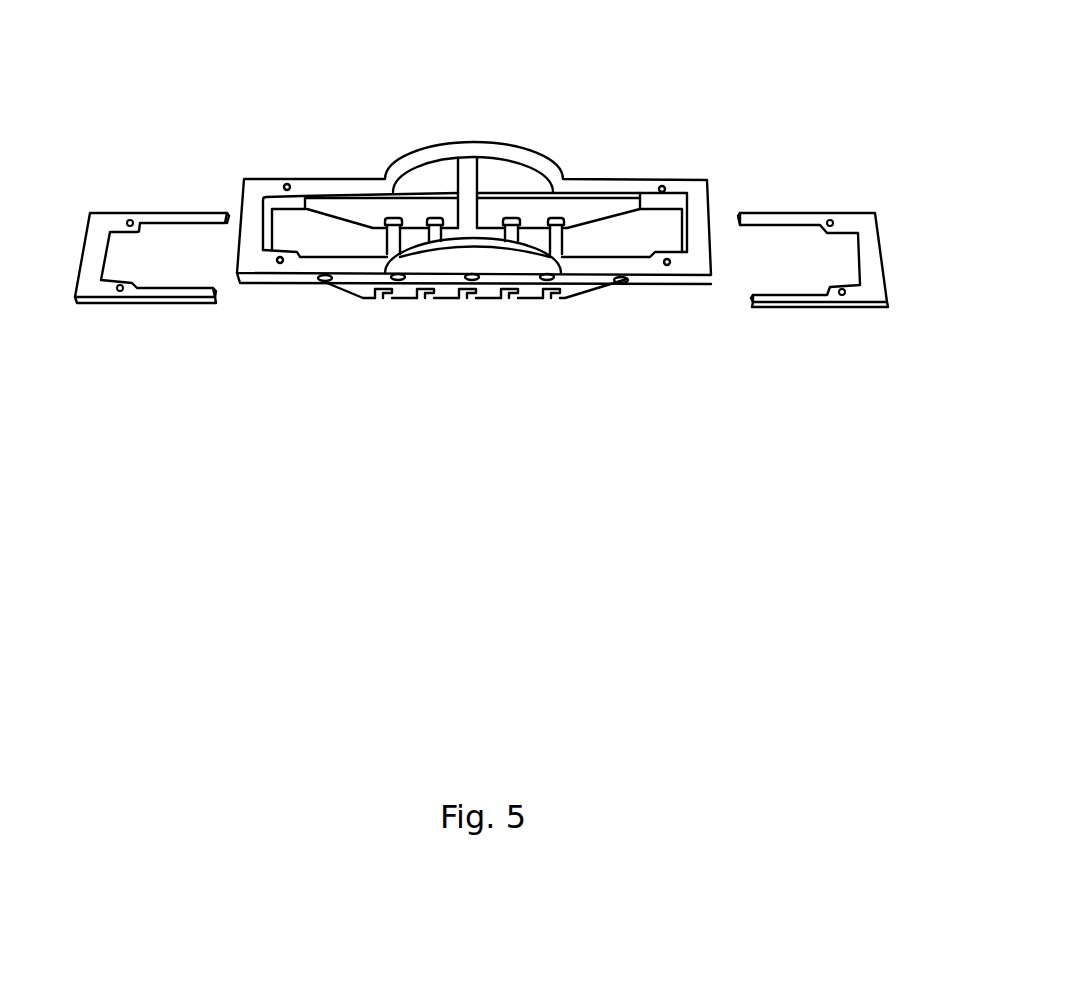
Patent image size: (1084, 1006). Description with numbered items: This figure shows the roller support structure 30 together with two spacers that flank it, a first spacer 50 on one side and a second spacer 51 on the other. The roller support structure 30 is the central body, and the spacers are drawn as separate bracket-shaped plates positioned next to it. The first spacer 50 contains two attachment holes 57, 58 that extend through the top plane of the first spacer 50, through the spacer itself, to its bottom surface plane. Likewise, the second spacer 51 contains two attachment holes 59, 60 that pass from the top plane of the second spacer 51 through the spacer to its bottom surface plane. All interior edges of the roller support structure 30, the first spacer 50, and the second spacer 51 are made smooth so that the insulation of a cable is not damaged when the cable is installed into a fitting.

The roller support structure 30 is at (432, 178).
The first spacer 50 is at (212, 300).
The second spacer 51 is at (808, 297).
The attachment hole 57 is at (130, 221).
The attachment hole 58 is at (120, 176).
The attachment hole 59 is at (832, 221).
The attachment hole 60 is at (840, 172).